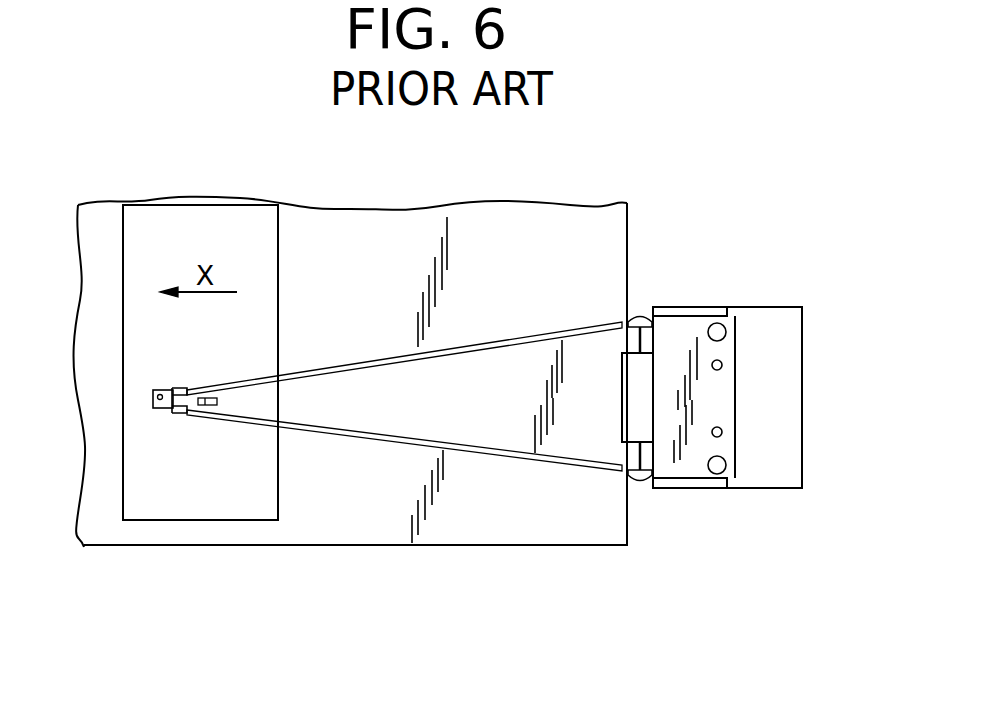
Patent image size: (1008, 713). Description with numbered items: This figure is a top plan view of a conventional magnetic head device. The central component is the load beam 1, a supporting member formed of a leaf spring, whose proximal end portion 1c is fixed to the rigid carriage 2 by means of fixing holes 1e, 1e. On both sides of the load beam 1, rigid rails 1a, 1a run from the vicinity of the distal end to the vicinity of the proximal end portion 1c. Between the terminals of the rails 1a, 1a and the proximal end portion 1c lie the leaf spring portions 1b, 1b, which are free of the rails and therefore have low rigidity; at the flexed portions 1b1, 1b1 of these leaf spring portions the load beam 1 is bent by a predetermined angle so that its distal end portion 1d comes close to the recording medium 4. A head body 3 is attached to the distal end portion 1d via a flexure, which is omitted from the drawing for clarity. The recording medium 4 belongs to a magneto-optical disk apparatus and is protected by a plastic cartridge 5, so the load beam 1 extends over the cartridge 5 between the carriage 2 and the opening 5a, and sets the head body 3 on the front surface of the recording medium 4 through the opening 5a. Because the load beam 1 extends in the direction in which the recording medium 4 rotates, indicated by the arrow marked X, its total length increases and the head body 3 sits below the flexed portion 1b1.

The load beam 1 is at (457, 421).
The rails 1a is at (503, 345).
The leaf spring portions 1b is at (637, 312).
The flexed portions 1b1 is at (640, 343).
The proximal end portion 1c is at (708, 398).
The distal end portion 1d is at (165, 388).
The fixing holes 1e is at (726, 332).
The carriage 2 is at (774, 439).
The head body 3 is at (178, 413).
The recording medium 4 is at (247, 490).
The cartridge 5 is at (383, 515).
The opening 5a is at (277, 248).